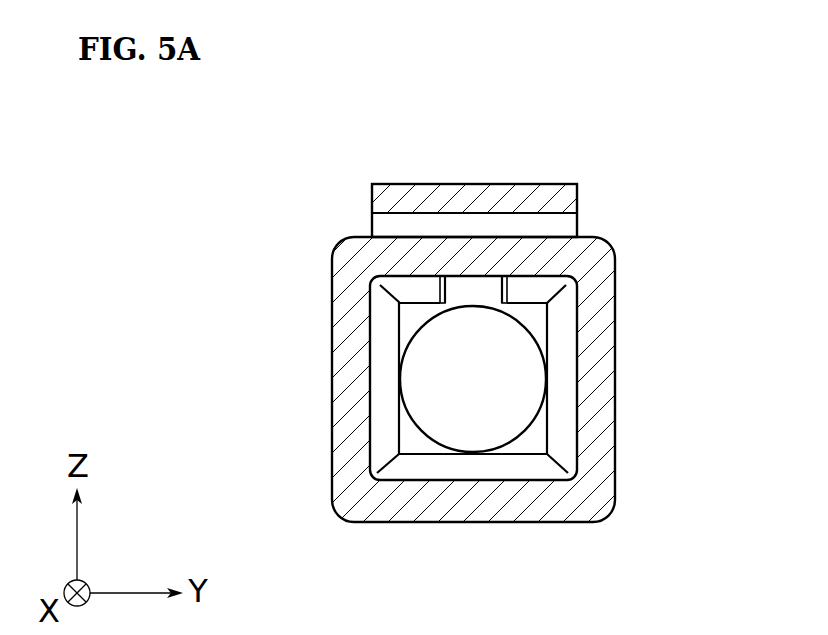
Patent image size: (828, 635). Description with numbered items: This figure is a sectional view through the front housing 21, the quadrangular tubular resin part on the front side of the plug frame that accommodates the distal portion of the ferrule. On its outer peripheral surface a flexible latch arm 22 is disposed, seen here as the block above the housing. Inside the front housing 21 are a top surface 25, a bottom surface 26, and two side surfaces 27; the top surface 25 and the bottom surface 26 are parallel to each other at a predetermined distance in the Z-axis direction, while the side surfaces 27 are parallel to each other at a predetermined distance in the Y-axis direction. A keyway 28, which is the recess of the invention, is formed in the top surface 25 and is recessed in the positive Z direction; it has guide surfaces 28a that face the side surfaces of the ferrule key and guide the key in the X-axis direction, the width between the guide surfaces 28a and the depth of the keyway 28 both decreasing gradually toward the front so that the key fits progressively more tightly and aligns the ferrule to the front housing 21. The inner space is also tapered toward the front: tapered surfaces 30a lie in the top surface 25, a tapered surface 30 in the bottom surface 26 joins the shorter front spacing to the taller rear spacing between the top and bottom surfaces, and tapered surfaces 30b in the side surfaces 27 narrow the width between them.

The front housing 21 is at (616, 462).
The latch arm 22 is at (547, 184).
The top surface 25 is at (473, 291).
The bottom surface 26 is at (488, 480).
The side surfaces 27 is at (368, 366).
The keyway 28 is at (484, 292).
The guide surfaces 28a is at (437, 282).
The tapered surface 30 is at (524, 467).
The tapered surfaces 30a is at (405, 291).
The tapered surfaces 30b is at (383, 412).